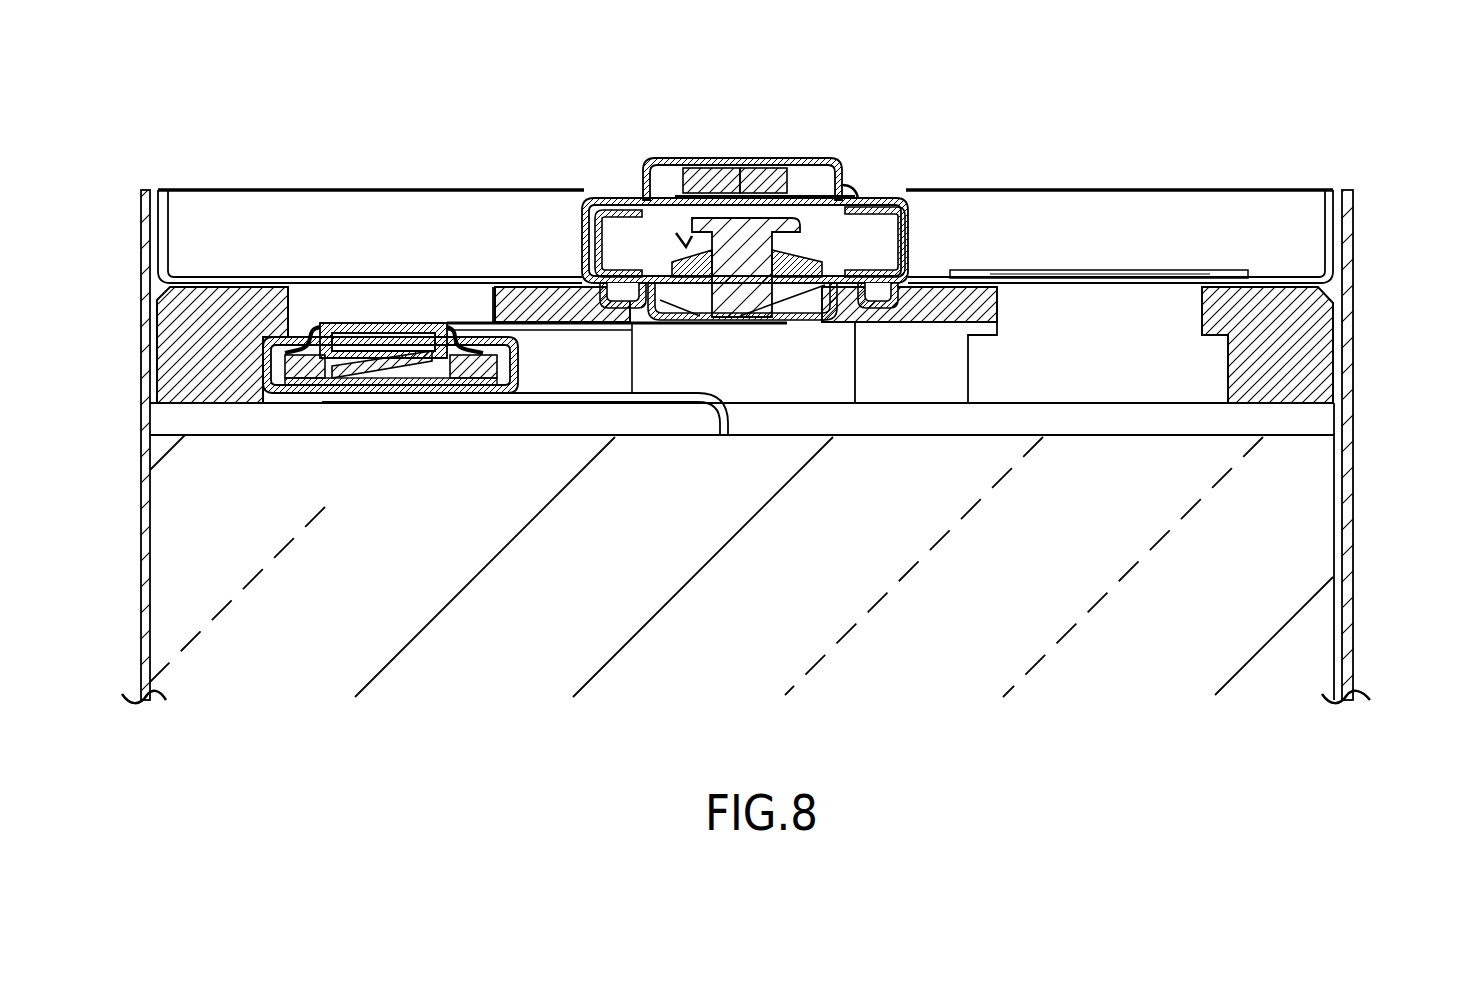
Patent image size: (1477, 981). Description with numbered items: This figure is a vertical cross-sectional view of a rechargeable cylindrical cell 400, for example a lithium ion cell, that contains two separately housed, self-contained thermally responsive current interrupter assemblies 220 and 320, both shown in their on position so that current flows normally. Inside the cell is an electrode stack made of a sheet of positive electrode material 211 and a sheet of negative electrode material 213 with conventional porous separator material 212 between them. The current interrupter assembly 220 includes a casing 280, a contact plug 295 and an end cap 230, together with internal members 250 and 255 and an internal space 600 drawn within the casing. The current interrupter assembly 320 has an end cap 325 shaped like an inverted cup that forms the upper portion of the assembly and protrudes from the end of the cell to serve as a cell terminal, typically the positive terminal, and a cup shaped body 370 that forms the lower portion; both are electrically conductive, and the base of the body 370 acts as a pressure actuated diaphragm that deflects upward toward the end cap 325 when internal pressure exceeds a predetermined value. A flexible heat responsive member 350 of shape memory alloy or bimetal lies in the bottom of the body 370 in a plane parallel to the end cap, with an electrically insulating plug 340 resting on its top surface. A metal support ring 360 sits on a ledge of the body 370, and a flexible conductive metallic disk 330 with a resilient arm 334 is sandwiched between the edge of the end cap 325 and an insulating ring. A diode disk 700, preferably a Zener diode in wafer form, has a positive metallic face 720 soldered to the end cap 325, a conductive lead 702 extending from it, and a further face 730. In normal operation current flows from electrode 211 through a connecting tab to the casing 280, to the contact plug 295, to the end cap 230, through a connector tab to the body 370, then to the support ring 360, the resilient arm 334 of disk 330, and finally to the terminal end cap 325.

The rechargeable cylindrical cell 400 is at (1353, 289).
The positive electrode material 211 is at (545, 655).
The porous separator material 212 is at (339, 642).
The negative electrode material 213 is at (215, 572).
The thermally responsive current interrupter assembly 220 is at (318, 337).
The end cap 230 is at (345, 340).
The diaphragm 250 is at (312, 378).
The seal strip 255 is at (397, 380).
The casing 280 is at (283, 395).
The contact plug 295 is at (327, 345).
The cavity 600 is at (370, 343).
The current interrupter assembly 320 is at (845, 182).
The end cap 325 is at (640, 210).
The flexible electrically conductive metallic disk 330 is at (718, 197).
The resilient arm 334 is at (658, 205).
The insulating plug 340 is at (788, 205).
The flexible heat responsive member 350 is at (807, 320).
The metal support ring 360 is at (850, 230).
The cup shaped body 370 is at (833, 312).
The diode disk 700 is at (683, 242).
The conductive lead 702 is at (840, 190).
The positive metallic face 720 is at (727, 235).
The cap insert 730 is at (772, 235).